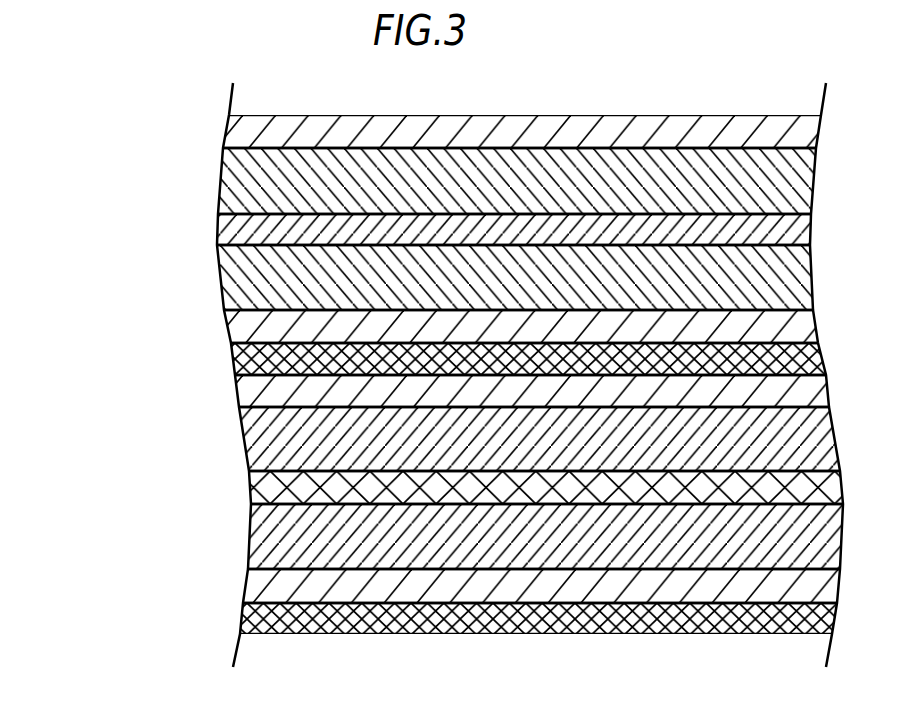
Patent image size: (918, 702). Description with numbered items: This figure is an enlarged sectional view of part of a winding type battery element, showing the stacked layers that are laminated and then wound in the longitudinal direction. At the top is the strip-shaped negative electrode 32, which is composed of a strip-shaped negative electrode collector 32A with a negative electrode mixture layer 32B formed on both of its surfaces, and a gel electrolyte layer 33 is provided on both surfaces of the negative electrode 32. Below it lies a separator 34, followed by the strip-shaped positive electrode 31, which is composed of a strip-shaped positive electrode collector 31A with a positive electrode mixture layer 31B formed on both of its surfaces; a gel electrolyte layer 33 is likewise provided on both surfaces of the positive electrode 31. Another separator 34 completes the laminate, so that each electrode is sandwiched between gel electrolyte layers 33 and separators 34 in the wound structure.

The positive electrode 31 is at (457, 488).
The positive electrode collector 31A is at (262, 487).
The positive electrode mixture layer 31B is at (260, 438).
The negative electrode 32 is at (454, 229).
The negative electrode collector 32A is at (252, 228).
The negative electrode mixture layer 32B is at (250, 180).
The gel electrolyte layer 33 is at (256, 131).
The separator 34 is at (253, 356).